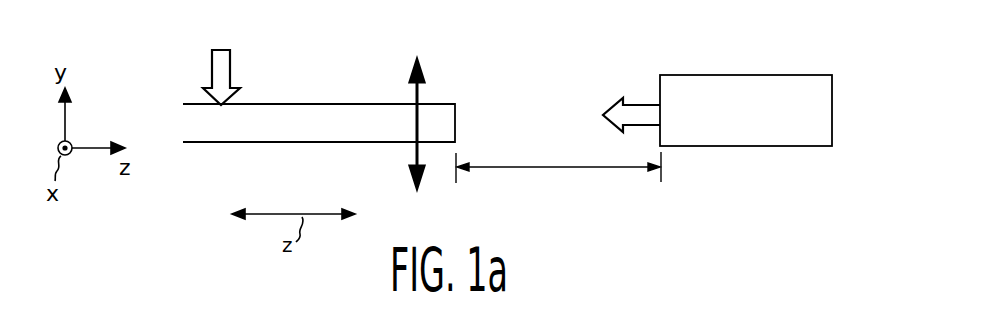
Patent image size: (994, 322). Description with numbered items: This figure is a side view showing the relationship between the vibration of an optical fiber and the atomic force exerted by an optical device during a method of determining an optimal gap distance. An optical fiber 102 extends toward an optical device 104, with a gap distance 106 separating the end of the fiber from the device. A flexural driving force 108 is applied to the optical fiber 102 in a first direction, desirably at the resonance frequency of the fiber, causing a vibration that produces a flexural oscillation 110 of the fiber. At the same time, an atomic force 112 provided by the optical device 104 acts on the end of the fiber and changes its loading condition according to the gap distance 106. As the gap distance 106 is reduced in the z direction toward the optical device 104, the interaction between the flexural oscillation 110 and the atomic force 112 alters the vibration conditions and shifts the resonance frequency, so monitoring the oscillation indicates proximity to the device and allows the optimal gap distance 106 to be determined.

The optical fiber 102 is at (238, 133).
The optical device 104 is at (767, 85).
The gap distance 106 is at (553, 168).
The flexural driving force 108 is at (230, 67).
The flexural oscillation 110 is at (418, 87).
The atomic force 112 is at (633, 102).